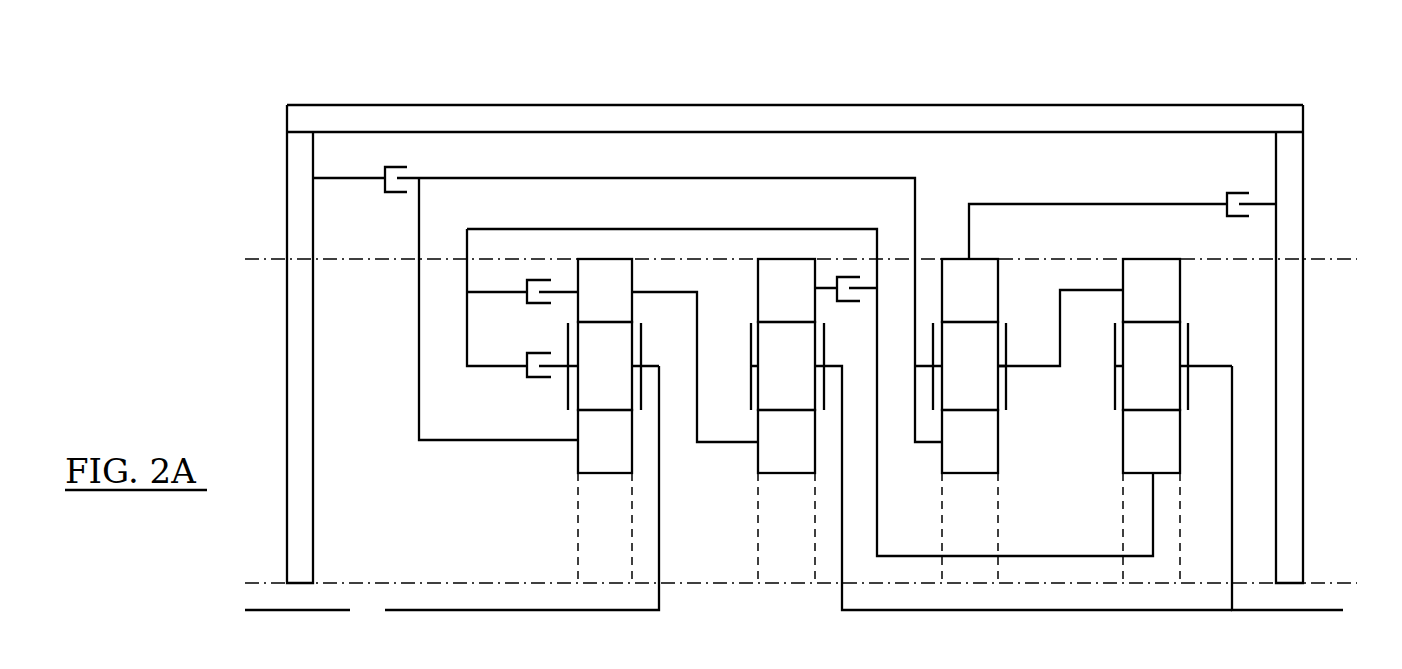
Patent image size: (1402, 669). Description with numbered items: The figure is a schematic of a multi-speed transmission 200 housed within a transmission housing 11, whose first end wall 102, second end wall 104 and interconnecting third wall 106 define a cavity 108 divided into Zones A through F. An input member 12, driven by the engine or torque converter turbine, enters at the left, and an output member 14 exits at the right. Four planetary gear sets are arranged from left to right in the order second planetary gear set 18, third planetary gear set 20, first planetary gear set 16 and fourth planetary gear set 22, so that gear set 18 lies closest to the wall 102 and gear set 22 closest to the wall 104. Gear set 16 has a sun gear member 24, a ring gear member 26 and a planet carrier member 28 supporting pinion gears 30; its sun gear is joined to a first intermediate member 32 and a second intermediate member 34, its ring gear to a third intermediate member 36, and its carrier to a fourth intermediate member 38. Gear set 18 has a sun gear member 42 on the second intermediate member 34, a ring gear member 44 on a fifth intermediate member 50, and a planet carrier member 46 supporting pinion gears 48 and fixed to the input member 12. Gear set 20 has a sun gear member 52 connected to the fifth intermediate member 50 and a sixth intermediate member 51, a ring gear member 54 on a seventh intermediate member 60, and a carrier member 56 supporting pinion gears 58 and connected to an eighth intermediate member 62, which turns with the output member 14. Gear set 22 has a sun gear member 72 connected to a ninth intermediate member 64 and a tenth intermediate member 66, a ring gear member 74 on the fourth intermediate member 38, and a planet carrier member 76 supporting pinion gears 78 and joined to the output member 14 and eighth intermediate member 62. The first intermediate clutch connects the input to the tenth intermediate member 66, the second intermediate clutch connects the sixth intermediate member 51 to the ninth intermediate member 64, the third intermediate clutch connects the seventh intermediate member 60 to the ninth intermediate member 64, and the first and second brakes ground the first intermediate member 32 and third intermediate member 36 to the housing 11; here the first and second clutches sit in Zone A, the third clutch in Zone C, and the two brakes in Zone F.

The transmission housing 11 is at (1187, 102).
The multi-speed transmission 200 is at (1318, 162).
The first end wall 102 is at (300, 176).
The second end wall 104 is at (1290, 312).
The third wall 106 is at (857, 110).
The cavity 108 is at (1251, 157).
The input member 12 is at (418, 602).
The output member 14 is at (1318, 607).
The first planetary gear set 16 is at (958, 487).
The second planetary gear set 18 is at (560, 452).
The third planetary gear set 20 is at (742, 452).
The fourth planetary gear set 22 is at (1135, 487).
The sun gear member 24 is at (970, 441).
The ring gear member 26 is at (970, 290).
The planet carrier member 28 is at (1008, 357).
The pinion gears 30 is at (970, 366).
The first intermediate member 32 is at (795, 178).
The second intermediate member 34 is at (443, 440).
The third intermediate member 36 is at (998, 204).
The fourth intermediate member 38 is at (1062, 322).
The sun gear member 42 is at (605, 441).
The ring gear member 44 is at (605, 290).
The planet carrier member 46 is at (642, 356).
The pinion gears 48 is at (605, 366).
The fifth intermediate member 50 is at (663, 292).
The sixth intermediate member 51 is at (560, 296).
The sun gear member 52 is at (786, 441).
The ring gear member 54 is at (786, 290).
The carrier member 56 is at (748, 343).
The pinion gears 58 is at (786, 366).
The seventh intermediate member 60 is at (828, 287).
The eighth intermediate member 62 is at (1020, 612).
The ninth intermediate member 64 is at (705, 229).
The tenth intermediate member 66 is at (465, 308).
The sun gear member 72 is at (1151, 441).
The ring gear member 74 is at (1151, 290).
The planet carrier member 76 is at (1113, 340).
The pinion gears 78 is at (1151, 366).